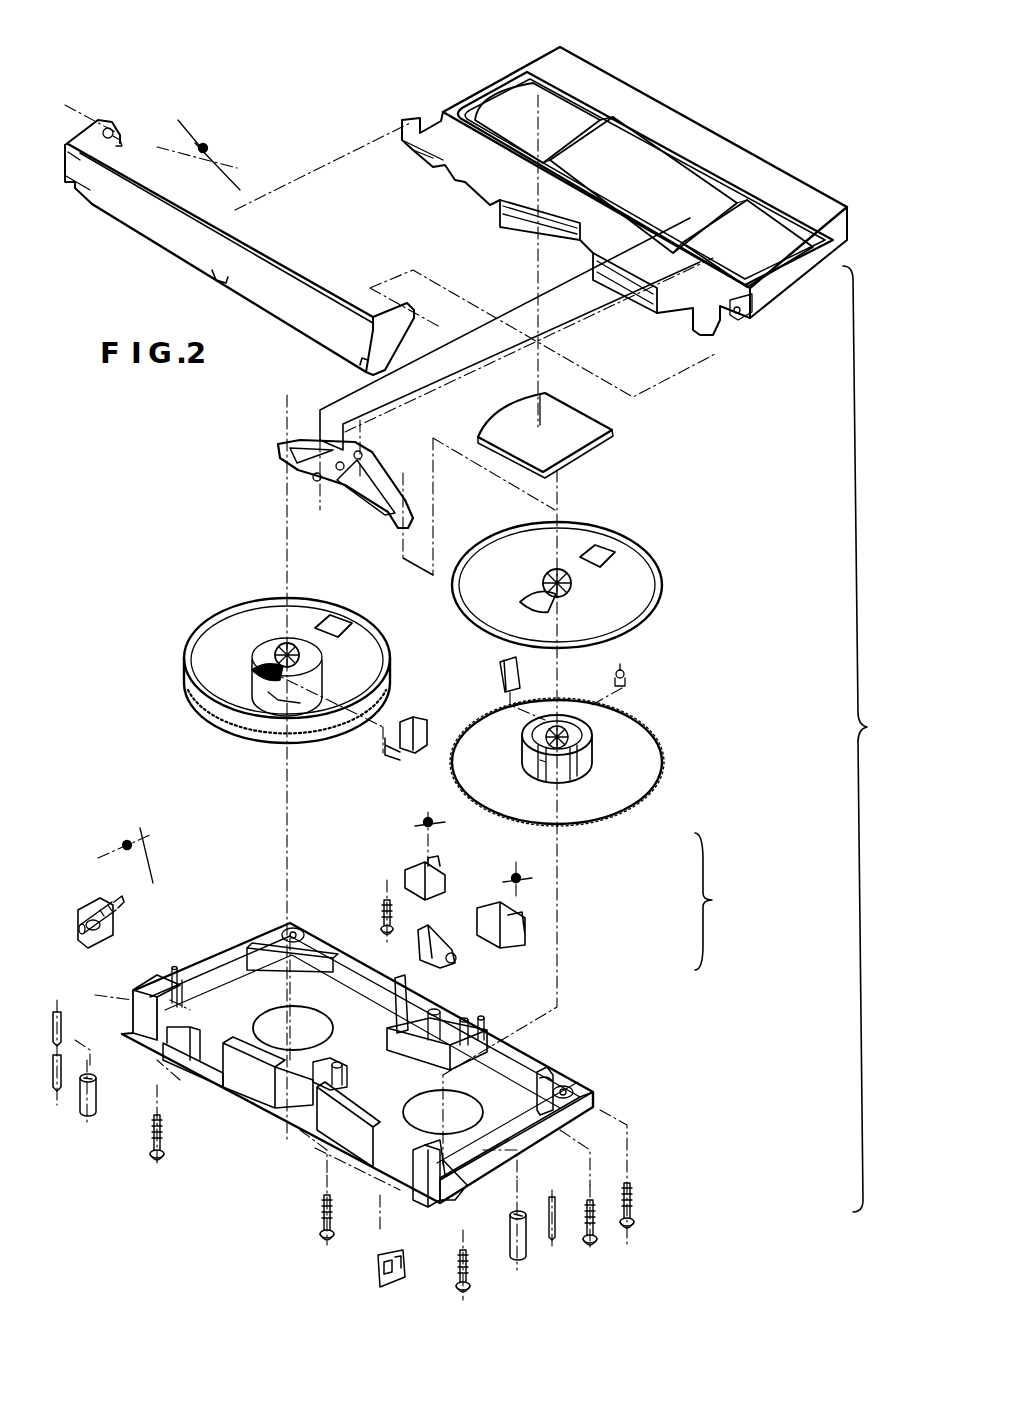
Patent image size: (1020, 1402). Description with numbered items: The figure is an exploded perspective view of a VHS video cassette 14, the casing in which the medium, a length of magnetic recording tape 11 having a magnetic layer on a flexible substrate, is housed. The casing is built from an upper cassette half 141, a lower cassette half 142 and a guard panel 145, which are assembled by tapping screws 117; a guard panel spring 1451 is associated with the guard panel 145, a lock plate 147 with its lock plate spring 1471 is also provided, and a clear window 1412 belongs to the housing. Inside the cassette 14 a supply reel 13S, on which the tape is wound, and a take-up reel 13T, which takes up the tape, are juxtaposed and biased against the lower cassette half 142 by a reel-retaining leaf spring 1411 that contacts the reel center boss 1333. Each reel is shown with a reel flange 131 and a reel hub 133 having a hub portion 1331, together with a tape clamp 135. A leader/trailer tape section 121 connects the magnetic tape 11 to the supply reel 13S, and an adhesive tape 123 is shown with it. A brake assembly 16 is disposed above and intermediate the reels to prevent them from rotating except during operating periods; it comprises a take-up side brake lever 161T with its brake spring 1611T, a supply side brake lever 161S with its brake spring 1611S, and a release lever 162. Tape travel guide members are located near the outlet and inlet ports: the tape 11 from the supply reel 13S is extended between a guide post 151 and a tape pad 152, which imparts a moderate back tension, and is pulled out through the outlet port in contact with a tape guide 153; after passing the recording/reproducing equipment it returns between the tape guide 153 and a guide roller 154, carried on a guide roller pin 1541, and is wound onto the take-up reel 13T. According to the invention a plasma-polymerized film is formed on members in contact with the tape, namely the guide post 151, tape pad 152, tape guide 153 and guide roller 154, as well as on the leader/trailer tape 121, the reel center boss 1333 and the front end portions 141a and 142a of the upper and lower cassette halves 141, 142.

The video cassette 14 is at (760, 130).
The upper cassette half 141 is at (797, 293).
The front end portion of upper cassette half 141a is at (518, 225).
The guard panel 145 is at (310, 318).
The guard panel spring 1451 is at (207, 148).
The recording tape 11 is at (336, 720).
The reel-retaining leaf spring 1411 is at (280, 448).
The clear window 1412 is at (582, 434).
The take-up reel 13T is at (224, 603).
The supply reel 13S is at (607, 578).
The reel flange 131 is at (628, 565).
The reel hub 133 is at (591, 761).
The hub portion 1331 is at (598, 752).
The reel center boss 1333 is at (627, 676).
The tape clamp 135 is at (500, 665).
The leader/trailer tape 121 is at (410, 718).
The adhesive tape 123 is at (400, 750).
The brake assembly 16 is at (571, 895).
The brake spring 1611T is at (432, 822).
The brake lever 161T is at (447, 878).
The brake spring 1611S is at (520, 877).
The brake lever 161S is at (527, 928).
The release lever 162 is at (452, 945).
The lock plate spring 1471 is at (127, 842).
The lock plate 147 is at (108, 923).
The lower cassette half 142 is at (593, 1097).
The front end portion of lower cassette half 142a is at (247, 1080).
The guide roller 154 is at (57, 1020).
The guide roller pin 1541 is at (60, 1090).
The tape guide 153 is at (97, 1105).
The tapping screws 117 is at (320, 1210).
The tape pad 152 is at (393, 1256).
The guide post 151 is at (430, 1185).